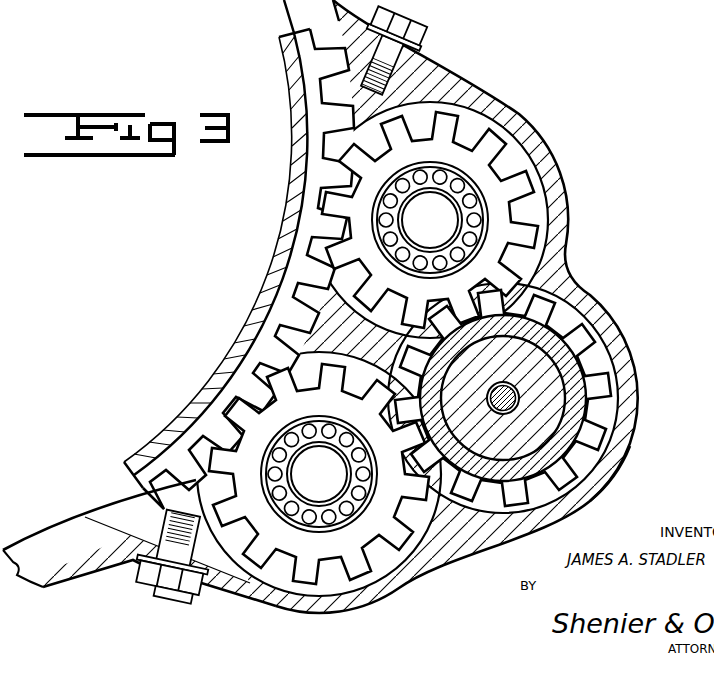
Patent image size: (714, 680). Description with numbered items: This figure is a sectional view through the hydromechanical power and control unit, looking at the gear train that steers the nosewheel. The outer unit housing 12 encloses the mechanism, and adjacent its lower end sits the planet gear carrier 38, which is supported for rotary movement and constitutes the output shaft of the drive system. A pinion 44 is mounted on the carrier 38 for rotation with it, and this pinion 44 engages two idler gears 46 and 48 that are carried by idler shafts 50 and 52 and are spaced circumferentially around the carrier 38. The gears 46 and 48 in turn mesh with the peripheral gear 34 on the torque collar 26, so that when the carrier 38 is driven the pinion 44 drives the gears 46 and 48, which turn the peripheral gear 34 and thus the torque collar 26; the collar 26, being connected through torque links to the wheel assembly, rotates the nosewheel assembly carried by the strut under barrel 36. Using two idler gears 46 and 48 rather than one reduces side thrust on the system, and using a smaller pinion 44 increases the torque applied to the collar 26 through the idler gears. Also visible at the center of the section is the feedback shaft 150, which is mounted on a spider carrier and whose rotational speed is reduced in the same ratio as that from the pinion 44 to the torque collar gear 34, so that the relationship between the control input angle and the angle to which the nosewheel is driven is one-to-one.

The outer unit housing 12 is at (587, 294).
The torque collar 26 is at (211, 382).
The peripheral gear 34 is at (298, 282).
The strut under barrel 36 is at (550, 5).
The planet gear carrier 38 is at (601, 474).
The pinion 44 is at (586, 440).
The gear 46 is at (507, 213).
The gear 48 is at (391, 584).
The idler shaft 50 is at (445, 208).
The idler shaft 52 is at (314, 495).
The feedback shaft 150 is at (517, 400).